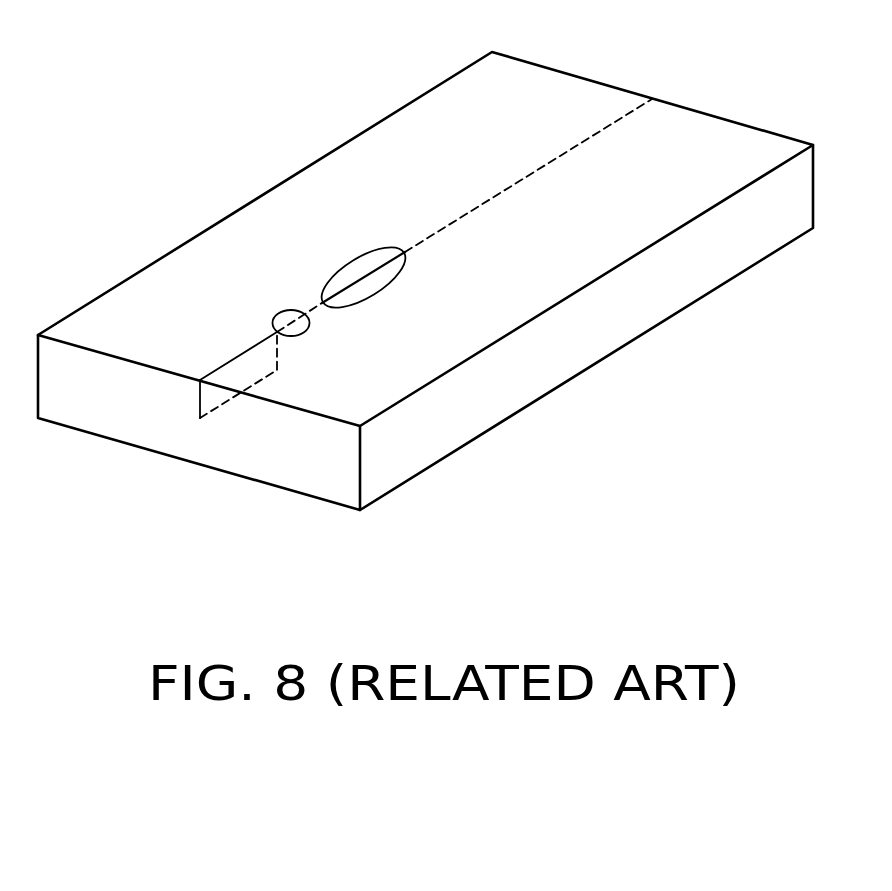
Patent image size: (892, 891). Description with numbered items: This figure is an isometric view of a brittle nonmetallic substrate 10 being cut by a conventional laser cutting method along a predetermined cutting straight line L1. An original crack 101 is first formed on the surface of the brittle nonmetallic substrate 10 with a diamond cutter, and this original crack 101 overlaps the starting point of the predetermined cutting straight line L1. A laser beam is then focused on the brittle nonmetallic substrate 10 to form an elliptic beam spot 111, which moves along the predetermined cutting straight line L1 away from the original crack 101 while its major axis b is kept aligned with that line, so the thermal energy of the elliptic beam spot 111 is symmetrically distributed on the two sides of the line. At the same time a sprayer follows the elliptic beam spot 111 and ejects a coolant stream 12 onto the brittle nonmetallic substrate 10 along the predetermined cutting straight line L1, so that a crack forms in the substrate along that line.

The brittle nonmetallic substrate 10 is at (455, 108).
The predetermined cutting straight line L1 is at (615, 120).
The original crack 101 is at (200, 398).
The coolant stream 12 is at (278, 315).
The elliptic beam spot 111 is at (362, 257).
The major axis b is at (347, 287).